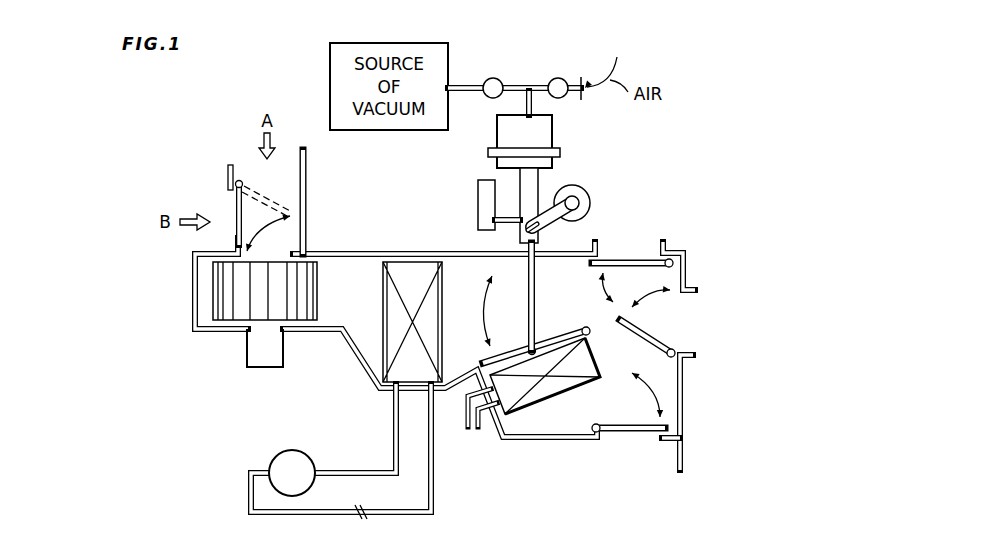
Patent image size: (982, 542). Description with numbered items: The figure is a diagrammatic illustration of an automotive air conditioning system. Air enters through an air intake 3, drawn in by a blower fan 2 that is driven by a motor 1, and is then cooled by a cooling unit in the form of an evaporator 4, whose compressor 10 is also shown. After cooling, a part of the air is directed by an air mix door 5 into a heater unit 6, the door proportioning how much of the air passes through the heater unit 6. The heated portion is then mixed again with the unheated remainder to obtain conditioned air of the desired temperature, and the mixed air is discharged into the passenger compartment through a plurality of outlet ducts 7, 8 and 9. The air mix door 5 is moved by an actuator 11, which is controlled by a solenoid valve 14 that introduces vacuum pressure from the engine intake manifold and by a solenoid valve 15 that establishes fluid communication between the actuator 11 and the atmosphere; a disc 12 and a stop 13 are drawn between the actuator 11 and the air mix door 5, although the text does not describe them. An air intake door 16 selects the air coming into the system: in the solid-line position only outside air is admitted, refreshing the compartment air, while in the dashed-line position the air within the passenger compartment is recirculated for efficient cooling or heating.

The motor 1 is at (255, 352).
The blower fan 2 is at (232, 303).
The air intake 3 is at (270, 257).
The evaporator 4 is at (400, 330).
The air mix door 5 is at (558, 334).
The heater unit 6 is at (546, 385).
The outlet duct 7 is at (634, 435).
The outlet duct 8 is at (650, 327).
The outlet duct 9 is at (637, 258).
The compressor 10 is at (285, 462).
The actuator 11 is at (552, 130).
The cam disc 12 is at (586, 196).
The stopper 13 is at (478, 205).
The solenoid valve 14 is at (493, 78).
The solenoid valve 15 is at (558, 78).
The air intake door 16 is at (237, 205).